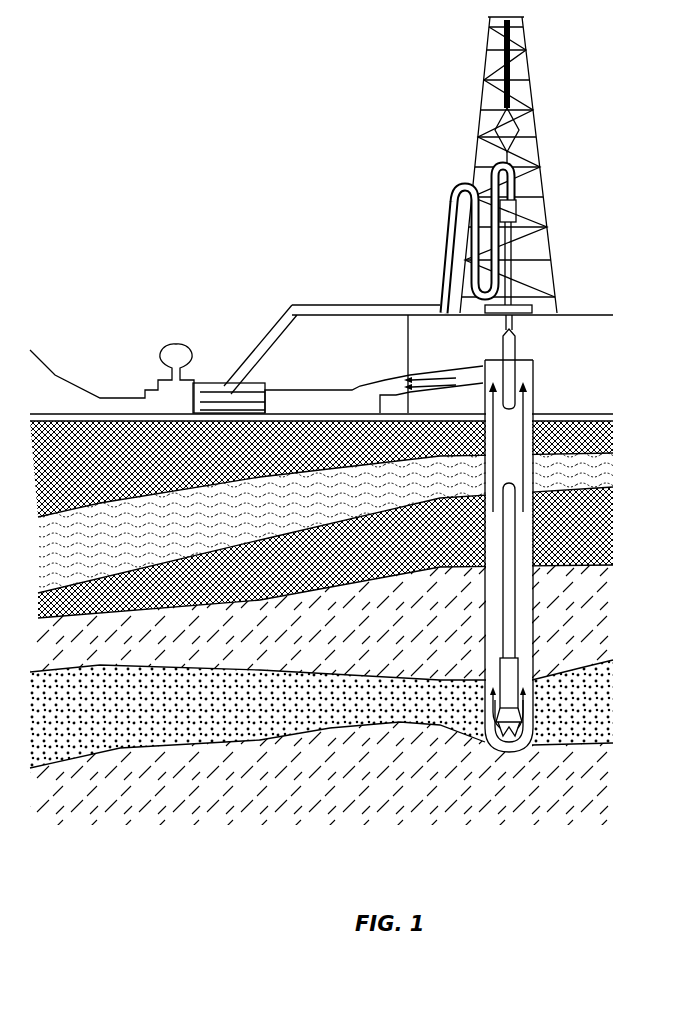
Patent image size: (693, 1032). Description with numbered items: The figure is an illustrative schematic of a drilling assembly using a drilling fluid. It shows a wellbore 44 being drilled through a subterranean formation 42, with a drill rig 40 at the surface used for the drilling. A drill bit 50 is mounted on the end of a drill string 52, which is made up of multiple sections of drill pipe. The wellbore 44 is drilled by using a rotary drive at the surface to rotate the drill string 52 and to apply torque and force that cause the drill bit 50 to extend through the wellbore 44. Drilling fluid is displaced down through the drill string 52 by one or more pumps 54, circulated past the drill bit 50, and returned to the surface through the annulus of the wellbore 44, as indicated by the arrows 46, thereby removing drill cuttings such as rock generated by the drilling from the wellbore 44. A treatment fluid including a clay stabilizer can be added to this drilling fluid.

The drill rig 40 is at (588, 186).
The subterranean formation 42 is at (334, 635).
The wellbore 44 is at (537, 398).
The arrows 46 is at (540, 482).
The drill bit 50 is at (532, 735).
The drill string 52 is at (522, 347).
The pumps 54 is at (152, 378).